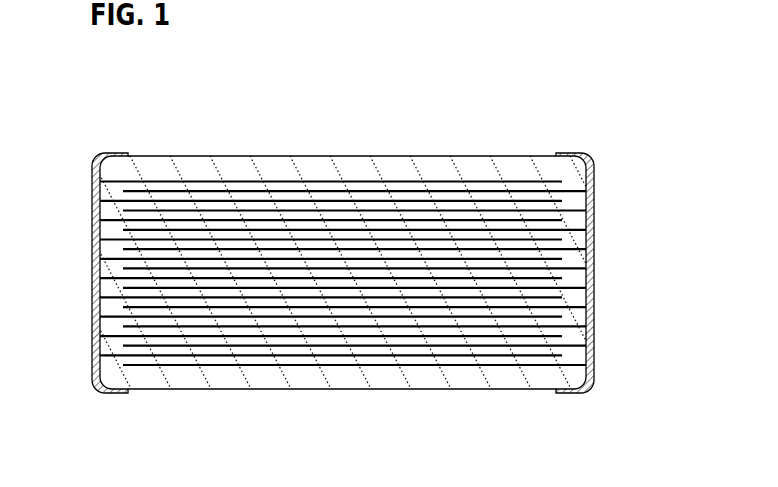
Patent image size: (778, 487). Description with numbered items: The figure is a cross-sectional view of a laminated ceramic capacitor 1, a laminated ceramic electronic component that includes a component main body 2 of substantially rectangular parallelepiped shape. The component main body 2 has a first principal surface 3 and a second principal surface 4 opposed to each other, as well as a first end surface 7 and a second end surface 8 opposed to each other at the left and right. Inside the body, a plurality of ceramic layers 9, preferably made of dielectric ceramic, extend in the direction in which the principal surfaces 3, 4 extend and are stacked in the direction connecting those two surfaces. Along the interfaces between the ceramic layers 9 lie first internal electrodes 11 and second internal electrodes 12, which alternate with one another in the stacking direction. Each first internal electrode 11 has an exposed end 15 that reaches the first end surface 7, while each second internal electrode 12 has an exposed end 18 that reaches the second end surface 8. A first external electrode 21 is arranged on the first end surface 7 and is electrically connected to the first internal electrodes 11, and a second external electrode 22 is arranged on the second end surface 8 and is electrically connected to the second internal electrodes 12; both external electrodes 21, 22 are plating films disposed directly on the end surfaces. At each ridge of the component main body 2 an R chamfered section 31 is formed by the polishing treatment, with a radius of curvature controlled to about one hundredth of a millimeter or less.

The laminated ceramic capacitor 1 is at (149, 88).
The component main body 2 is at (447, 148).
The first principal surface 3 is at (354, 156).
The second principal surface 4 is at (340, 390).
The first end surface 7 is at (100, 267).
The second end surface 8 is at (587, 241).
The ceramic layers 9 is at (261, 352).
The first internal electrodes 11 is at (289, 200).
The second internal electrodes 12 is at (430, 350).
The exposed end 15 is at (100, 182).
The exposed end 18 is at (586, 191).
The first external electrode 21 is at (100, 325).
The second external electrode 22 is at (590, 300).
The R chamfered section 31 is at (106, 157).